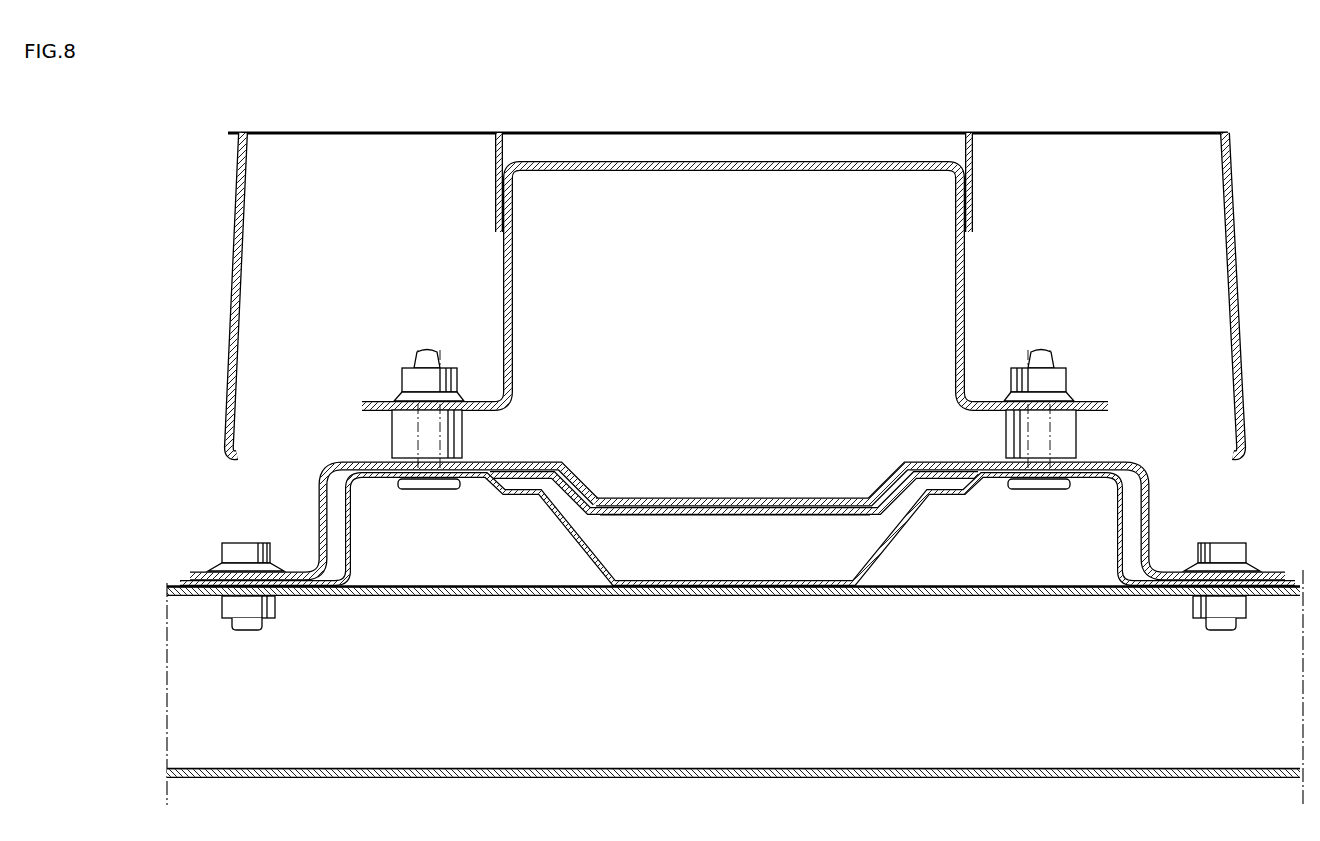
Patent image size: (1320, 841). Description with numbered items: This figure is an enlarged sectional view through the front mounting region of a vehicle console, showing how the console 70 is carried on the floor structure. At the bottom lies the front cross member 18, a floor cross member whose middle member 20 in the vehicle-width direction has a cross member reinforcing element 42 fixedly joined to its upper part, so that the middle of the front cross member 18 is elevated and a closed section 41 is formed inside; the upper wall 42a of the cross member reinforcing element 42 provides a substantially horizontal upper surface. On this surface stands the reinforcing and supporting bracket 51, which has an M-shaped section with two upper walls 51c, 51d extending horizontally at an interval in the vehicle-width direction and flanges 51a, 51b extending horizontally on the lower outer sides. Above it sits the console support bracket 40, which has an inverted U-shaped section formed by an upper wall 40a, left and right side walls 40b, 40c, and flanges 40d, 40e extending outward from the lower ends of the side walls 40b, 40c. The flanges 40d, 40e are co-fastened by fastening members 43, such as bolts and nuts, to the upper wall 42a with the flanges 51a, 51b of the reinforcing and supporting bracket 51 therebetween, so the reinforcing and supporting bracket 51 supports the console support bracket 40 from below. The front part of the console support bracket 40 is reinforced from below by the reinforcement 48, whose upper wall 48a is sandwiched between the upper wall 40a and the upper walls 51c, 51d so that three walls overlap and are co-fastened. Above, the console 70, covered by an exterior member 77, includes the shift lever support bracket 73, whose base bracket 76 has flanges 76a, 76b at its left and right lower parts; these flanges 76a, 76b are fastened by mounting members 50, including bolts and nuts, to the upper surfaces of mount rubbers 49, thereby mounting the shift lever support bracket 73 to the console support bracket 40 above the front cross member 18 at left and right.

The console 70 is at (770, 294).
The shift lever support bracket 73 is at (971, 256).
The base bracket 76 is at (736, 269).
The flange 76a is at (1100, 402).
The flange 76b is at (377, 402).
The exterior member 77 is at (1246, 290).
The mounting member 50 is at (402, 378).
The mount rubber 49 is at (392, 440).
The console support bracket 40 is at (737, 491).
The upper wall 40a is at (487, 461).
The side wall 40b is at (1151, 513).
The side wall 40c is at (317, 513).
The flange 40d is at (1266, 571).
The flange 40e is at (217, 571).
The reinforcement of the console support bracket 48 is at (734, 522).
The upper wall 48a is at (788, 515).
The reinforcing and supporting bracket 51 is at (737, 555).
The flange 51a is at (1258, 589).
The flange 51b is at (212, 588).
The upper wall 51c is at (1049, 490).
The upper wall 51d is at (425, 490).
The cross member reinforcing element 42 is at (733, 553).
The upper wall 42a is at (1040, 585).
The fastening member 43 is at (275, 604).
The closed section 41 is at (503, 702).
The front cross member 18 is at (283, 760).
The middle member 20 is at (733, 736).